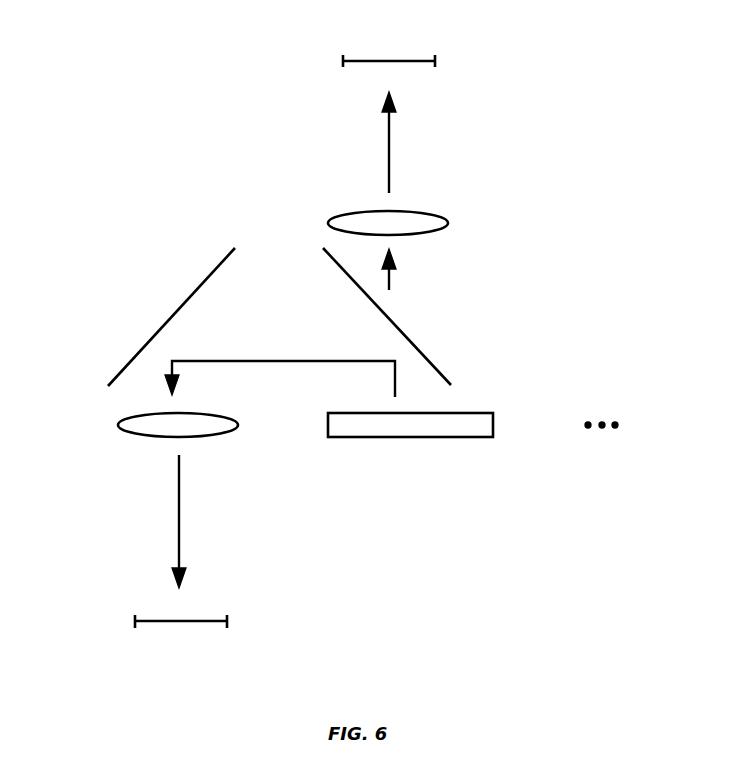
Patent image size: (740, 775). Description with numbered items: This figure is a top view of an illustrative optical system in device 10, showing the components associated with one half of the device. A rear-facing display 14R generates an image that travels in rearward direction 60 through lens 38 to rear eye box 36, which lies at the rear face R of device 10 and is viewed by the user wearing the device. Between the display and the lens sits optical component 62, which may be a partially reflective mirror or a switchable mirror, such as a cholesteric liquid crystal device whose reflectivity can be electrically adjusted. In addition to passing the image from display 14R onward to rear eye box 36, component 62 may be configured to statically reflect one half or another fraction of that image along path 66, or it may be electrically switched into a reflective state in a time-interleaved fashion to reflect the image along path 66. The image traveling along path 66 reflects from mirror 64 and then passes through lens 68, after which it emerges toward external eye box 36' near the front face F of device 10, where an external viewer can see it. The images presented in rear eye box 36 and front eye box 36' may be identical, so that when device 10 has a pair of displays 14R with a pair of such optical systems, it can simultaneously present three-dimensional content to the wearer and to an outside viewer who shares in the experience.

The rear eye box 36 is at (427, 61).
The external eye box 36' is at (220, 622).
The rearward direction 60 is at (389, 148).
The lens 38 is at (448, 223).
The mirror 64 is at (153, 337).
The optical component 62 is at (407, 336).
The path 66 is at (287, 361).
The lens 68 is at (118, 425).
The rear-facing display 14R is at (415, 437).
The device 10 is at (608, 313).
The rear face R is at (563, 135).
The front face F is at (497, 598).